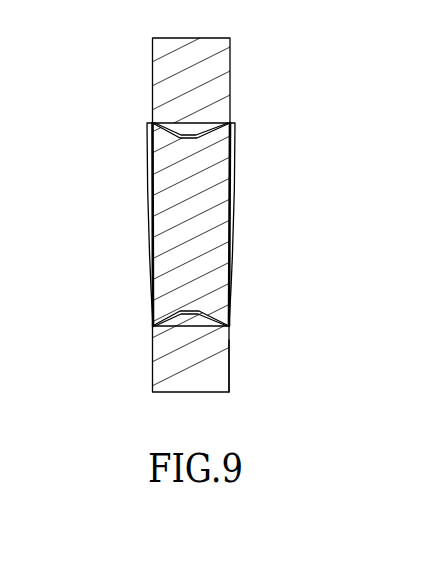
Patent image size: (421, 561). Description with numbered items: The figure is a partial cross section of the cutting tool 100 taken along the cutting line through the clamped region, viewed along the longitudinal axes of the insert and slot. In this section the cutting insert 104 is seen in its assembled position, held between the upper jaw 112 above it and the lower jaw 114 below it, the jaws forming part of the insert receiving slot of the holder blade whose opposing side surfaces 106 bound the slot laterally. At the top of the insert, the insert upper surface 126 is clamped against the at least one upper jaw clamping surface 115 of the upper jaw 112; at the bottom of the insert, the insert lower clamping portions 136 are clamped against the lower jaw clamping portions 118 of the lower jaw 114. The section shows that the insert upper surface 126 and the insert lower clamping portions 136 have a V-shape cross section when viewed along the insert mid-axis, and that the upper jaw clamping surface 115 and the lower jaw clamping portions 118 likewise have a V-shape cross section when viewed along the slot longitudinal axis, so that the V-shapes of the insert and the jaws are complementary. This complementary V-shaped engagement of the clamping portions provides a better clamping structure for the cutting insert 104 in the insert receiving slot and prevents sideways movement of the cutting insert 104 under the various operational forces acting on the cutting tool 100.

The cutting tool 100 is at (196, 229).
The upper jaw 112 is at (151, 80).
The cutting insert 104 is at (150, 238).
The lower jaw 114 is at (152, 372).
The insert upper surface 126 is at (168, 131).
The upper jaw clamping surface 115 is at (235, 142).
The lower jaw clamping portions 118 is at (207, 312).
The insert lower clamping portions 136 is at (172, 320).
The side surfaces 106 is at (229, 357).